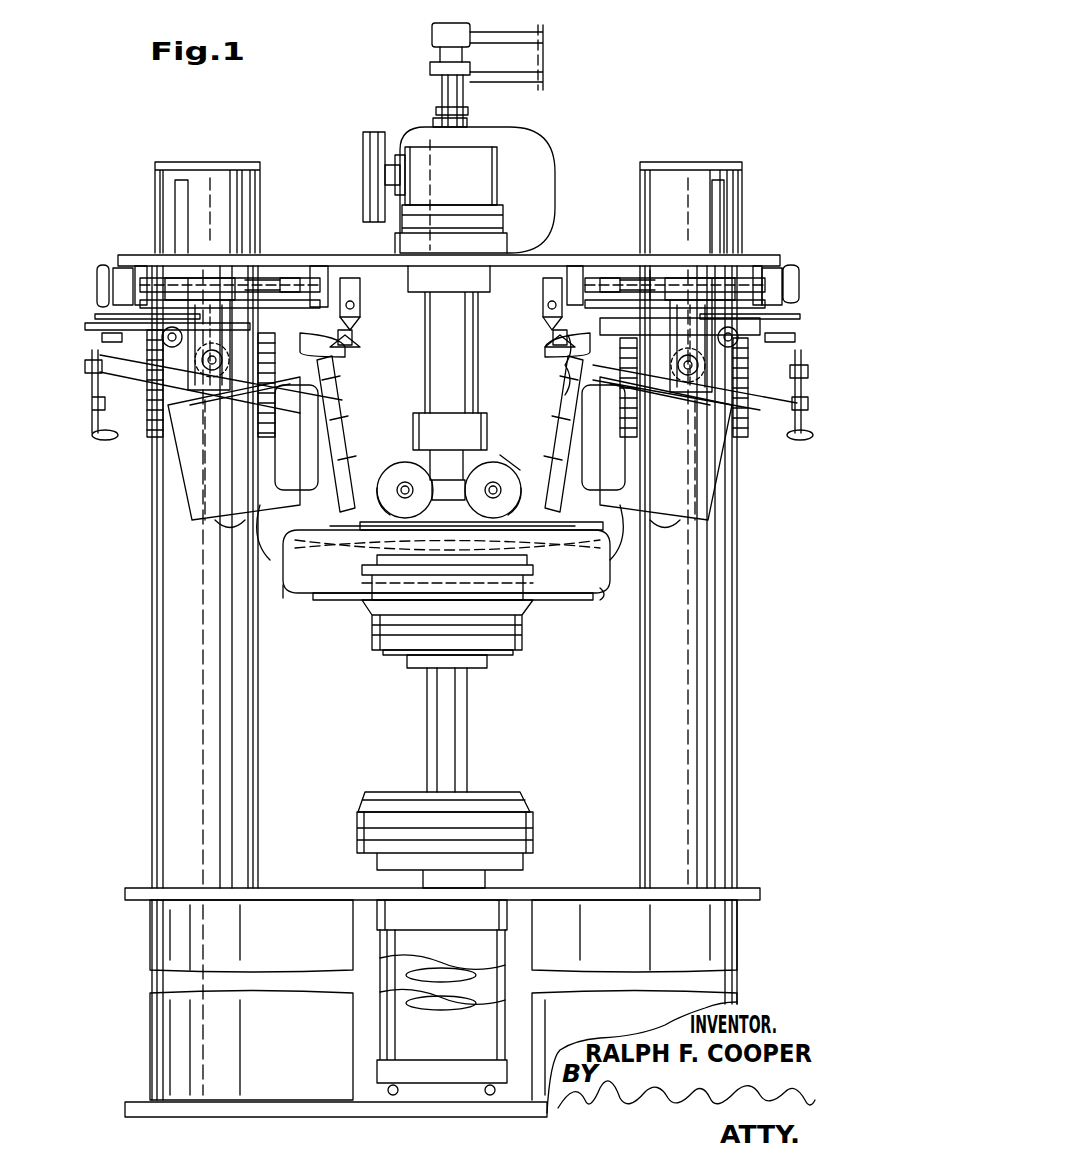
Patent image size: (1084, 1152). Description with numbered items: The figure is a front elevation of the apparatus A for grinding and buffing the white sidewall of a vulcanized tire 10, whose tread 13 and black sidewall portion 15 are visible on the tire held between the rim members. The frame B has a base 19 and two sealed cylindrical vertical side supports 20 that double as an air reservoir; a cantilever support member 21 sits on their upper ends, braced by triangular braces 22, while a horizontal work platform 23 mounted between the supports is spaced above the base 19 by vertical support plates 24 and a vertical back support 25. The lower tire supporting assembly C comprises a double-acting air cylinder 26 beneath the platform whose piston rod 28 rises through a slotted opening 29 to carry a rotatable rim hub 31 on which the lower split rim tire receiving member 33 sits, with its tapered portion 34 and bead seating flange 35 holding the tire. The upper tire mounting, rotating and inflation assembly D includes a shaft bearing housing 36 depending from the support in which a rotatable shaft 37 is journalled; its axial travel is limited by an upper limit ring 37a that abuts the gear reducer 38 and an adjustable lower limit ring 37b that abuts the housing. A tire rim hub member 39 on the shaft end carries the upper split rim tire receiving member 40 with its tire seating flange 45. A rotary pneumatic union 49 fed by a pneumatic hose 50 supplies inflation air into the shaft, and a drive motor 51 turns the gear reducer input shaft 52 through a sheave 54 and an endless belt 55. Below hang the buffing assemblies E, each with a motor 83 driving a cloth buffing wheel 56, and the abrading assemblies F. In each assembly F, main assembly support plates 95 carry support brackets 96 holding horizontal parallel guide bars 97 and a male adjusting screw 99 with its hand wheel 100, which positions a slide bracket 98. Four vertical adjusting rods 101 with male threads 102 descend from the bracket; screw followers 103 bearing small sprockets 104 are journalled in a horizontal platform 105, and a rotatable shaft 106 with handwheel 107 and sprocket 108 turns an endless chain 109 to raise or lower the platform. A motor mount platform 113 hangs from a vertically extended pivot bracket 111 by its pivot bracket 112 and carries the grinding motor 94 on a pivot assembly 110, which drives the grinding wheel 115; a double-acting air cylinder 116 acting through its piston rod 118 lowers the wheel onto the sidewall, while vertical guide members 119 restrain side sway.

The vulcanized tire 10 is at (320, 605).
The tread 13 is at (610, 590).
The black sidewall portion 15 is at (598, 598).
The base 19 is at (146, 1110).
The vertical side supports 20 is at (163, 718).
The cantilever support member 21 is at (425, 268).
The triangular braces 22 is at (182, 180).
The horizontal work platform 23 is at (622, 895).
The vertical support plates 24 is at (312, 946).
The vertical back support 25 is at (205, 675).
The double-acting air cylinder 26 is at (452, 1043).
The piston rod 28 is at (435, 756).
The slotted opening 29 is at (442, 915).
The rim hub 31 is at (400, 654).
The lower split rim tire receiving member 33 is at (505, 652).
The tire bead base receiving tapered portion 34 is at (530, 806).
The tire bead seating flange 35 is at (372, 625).
The shaft bearing housing 36 is at (488, 300).
The rotatable shaft 37 is at (440, 96).
The upper limit ring 37a is at (472, 68).
The adjustable lower limit ring 37b is at (476, 452).
The gear reducer 38 is at (470, 160).
The tire rim hub member 39 is at (432, 528).
The upper split rim tire receiving member 40 is at (528, 580).
The tire seating flange 45 is at (520, 530).
The rotary pneumatic union 49 is at (432, 32).
The pneumatic hose 50 is at (545, 36).
The drive motor 51 is at (540, 135).
The input shaft 52 is at (390, 158).
The sheave 54 is at (368, 162).
The endless belt 55 is at (372, 142).
The cloth buffing wheel 56 is at (385, 504).
The motor 83 is at (268, 525).
The grinding motor 94 is at (178, 503).
The main assembly support plates 95 is at (125, 270).
The support brackets 96 is at (122, 275).
The horizontal parallel guide bars 97 is at (310, 280).
The slide bracket 98 is at (182, 280).
The male adjusting screw 99 is at (300, 285).
The hand wheel 100 is at (96, 282).
The vertical adjusting rods 101 is at (155, 465).
The male threads 102 is at (150, 440).
The screw follower 103 is at (104, 362).
The small sprocket 104 is at (330, 360).
The horizontal platform 105 is at (357, 312).
The rotatable shaft 106 is at (114, 298).
The handwheel 107 is at (118, 338).
The sprocket 108 is at (105, 316).
The endless chain 109 is at (140, 327).
The pivot assembly 110 is at (262, 392).
The vertically extended pivot bracket 111 is at (95, 390).
The pivot bracket 112 is at (100, 432).
The motor mount platform 113 is at (360, 347).
The grinding wheel 115 is at (342, 420).
The double-acting air cylinder 116 is at (350, 278).
The piston rod 118 is at (355, 334).
The vertical guide members 119 is at (262, 410).
The apparatus A is at (278, 128).
The frame B is at (262, 840).
The lower tire supporting assembly C is at (503, 682).
The upper tire mounting, rotating and inflation assembly D is at (390, 108).
The tire sidewall buffing assemblies E is at (232, 528).
The tire sidewall abrading assemblies F is at (125, 490).